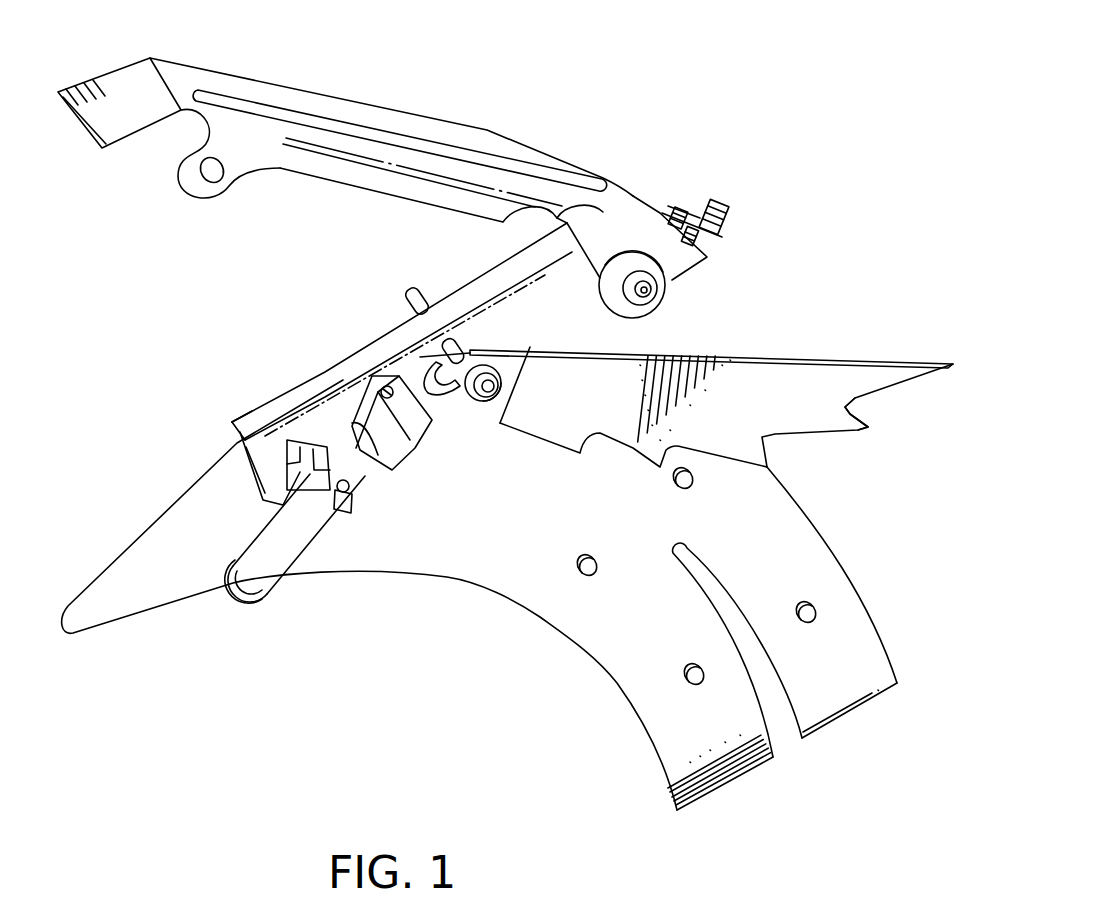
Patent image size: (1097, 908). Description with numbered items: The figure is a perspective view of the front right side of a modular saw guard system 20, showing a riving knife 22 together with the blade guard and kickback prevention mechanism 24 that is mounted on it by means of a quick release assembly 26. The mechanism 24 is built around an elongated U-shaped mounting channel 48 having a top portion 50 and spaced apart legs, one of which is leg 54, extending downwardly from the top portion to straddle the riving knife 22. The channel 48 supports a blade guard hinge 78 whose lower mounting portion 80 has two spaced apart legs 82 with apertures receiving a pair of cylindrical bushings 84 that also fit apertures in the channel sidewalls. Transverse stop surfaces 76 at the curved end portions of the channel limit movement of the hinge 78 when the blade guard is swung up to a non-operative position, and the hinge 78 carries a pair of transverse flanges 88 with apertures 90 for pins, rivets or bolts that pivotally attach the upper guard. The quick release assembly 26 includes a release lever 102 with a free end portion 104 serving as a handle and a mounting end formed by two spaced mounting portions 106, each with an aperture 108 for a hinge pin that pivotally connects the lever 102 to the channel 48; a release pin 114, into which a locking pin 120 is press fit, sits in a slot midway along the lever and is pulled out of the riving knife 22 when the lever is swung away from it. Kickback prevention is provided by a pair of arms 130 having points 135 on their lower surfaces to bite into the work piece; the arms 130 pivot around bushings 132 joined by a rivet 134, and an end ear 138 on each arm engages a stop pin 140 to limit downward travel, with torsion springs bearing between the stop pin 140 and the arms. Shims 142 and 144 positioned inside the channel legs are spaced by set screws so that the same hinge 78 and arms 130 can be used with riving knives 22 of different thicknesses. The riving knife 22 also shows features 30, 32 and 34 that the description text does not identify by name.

The modular saw guard system 20 is at (692, 95).
The riving knife 22 is at (541, 612).
The blade guard and kickback prevention mechanism 24 is at (265, 290).
The quick release assembly 26 is at (393, 525).
The arcuate slot 30 is at (787, 733).
The mounting hole 32 is at (680, 491).
The mounting hole 34 is at (686, 680).
The U-shaped mounting channel 48 is at (231, 421).
The top portion 50 is at (265, 410).
The leg 54 is at (265, 463).
The transverse stop surfaces 76 is at (668, 210).
The blade guard hinge 78 is at (400, 110).
The lower mounting portion 80 is at (582, 153).
The legs 82 is at (618, 232).
The cylindrical bushings 84 is at (660, 266).
The transverse flanges 88 is at (160, 173).
The apertures 90 is at (218, 182).
The release lever 102 is at (258, 586).
The free end portion 104 is at (255, 560).
The mounting portions 106 is at (378, 388).
The aperture 108 is at (386, 386).
The release pin 114 is at (346, 516).
The locking pin 120 is at (330, 445).
The arms 130 is at (778, 388).
The bushings 132 is at (503, 383).
The rivet 134 is at (490, 400).
The points 135 is at (862, 416).
The end ear 138 is at (437, 396).
The stop pin 140 is at (408, 290).
The shim 142 is at (712, 205).
The shim 144 is at (725, 216).